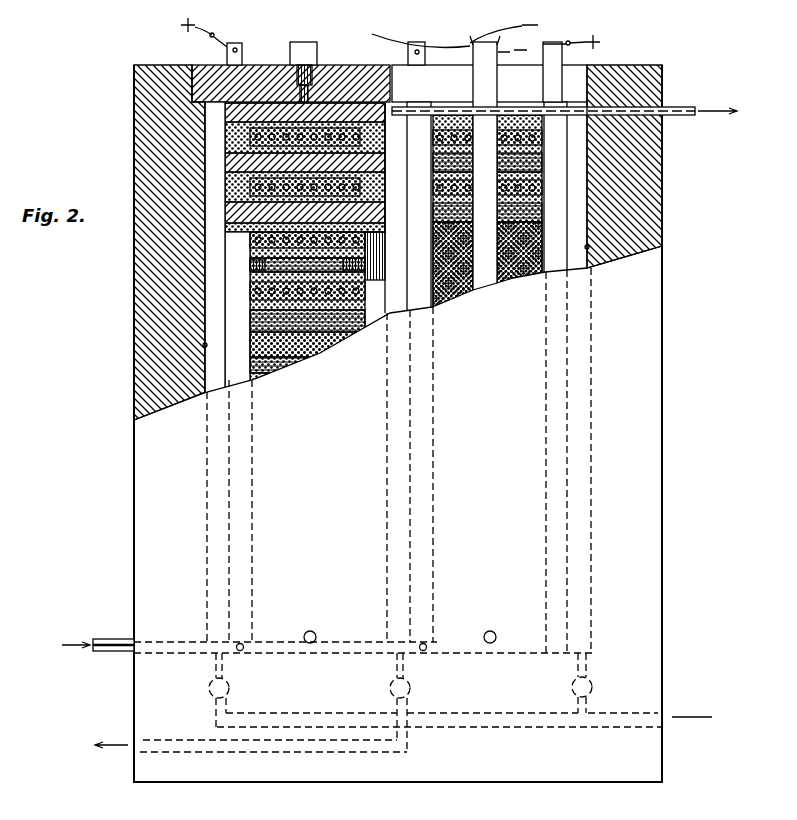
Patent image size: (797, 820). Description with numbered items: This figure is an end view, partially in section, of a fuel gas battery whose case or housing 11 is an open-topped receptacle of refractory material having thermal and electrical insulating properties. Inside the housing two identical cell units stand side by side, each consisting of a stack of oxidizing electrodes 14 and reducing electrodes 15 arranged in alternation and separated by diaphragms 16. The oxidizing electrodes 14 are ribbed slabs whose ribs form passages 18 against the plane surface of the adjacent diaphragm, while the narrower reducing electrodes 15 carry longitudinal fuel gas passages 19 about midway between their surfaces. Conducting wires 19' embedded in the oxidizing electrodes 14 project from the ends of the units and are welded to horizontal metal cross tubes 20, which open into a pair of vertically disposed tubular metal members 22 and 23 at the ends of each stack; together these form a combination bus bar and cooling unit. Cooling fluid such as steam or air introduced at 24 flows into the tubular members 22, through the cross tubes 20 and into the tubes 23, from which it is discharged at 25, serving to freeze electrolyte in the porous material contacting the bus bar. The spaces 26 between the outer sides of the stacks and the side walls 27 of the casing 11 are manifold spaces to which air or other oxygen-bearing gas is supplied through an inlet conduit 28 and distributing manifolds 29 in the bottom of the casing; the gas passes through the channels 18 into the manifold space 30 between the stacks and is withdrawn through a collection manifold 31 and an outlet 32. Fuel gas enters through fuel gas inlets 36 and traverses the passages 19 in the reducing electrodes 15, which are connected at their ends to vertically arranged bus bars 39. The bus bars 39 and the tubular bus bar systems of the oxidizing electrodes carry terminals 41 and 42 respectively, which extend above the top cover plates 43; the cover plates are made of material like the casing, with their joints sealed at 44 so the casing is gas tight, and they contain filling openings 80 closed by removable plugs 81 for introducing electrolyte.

The case or housing 11 is at (653, 204).
The oxidizing electrodes 14 is at (223, 115).
The reducing electrodes 15 is at (248, 141).
The diaphragms 16 is at (257, 148).
The passages 18 is at (270, 125).
The fuel gas passages 19 is at (307, 310).
The conducting wires 19' is at (307, 162).
The horizontal metal cross tubes 20 is at (277, 323).
The tubular metal members 22 is at (240, 380).
The tubular metal members 23 is at (378, 328).
The cooling fluid inlet 24 is at (120, 640).
The cooling fluid discharge 25 is at (673, 107).
The manifold spaces 26 is at (208, 302).
The side walls 27 is at (203, 345).
The inlet conduit 28 is at (658, 713).
The distributing manifolds 29 is at (230, 688).
The manifold space 30 is at (420, 302).
The collection manifold 31 is at (411, 688).
The outlet 32 is at (143, 738).
The fuel gas inlets 36 is at (313, 631).
The bus bars 39 is at (487, 280).
The terminals 41 is at (317, 82).
The terminals 42 is at (248, 33).
The top cover plates 43 is at (215, 72).
The sealed joints 44 is at (190, 76).
The filling openings 80 is at (407, 33).
The removable plugs 81 is at (302, 47).